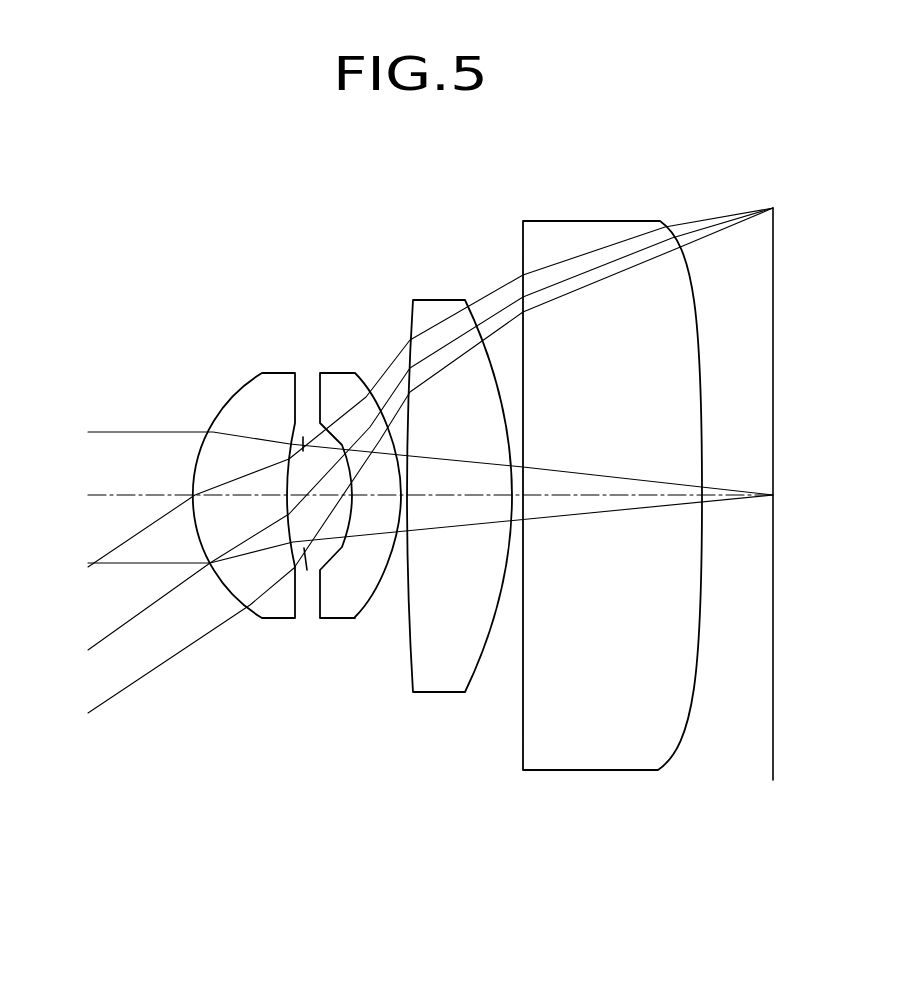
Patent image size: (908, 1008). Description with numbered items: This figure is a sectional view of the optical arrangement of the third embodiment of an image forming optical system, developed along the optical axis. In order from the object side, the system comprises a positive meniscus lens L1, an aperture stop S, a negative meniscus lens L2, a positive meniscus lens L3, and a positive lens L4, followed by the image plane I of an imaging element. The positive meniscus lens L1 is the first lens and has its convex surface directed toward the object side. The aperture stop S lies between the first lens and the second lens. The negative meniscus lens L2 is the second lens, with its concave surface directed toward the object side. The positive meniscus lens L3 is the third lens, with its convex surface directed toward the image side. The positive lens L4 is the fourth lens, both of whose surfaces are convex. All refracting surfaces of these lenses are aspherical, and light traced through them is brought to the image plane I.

The positive meniscus lens L1 is at (278, 622).
The negative meniscus lens L2 is at (337, 622).
The positive meniscus lens L3 is at (433, 694).
The positive lens L4 is at (592, 772).
The aperture stop S is at (307, 570).
The image plane I is at (773, 760).